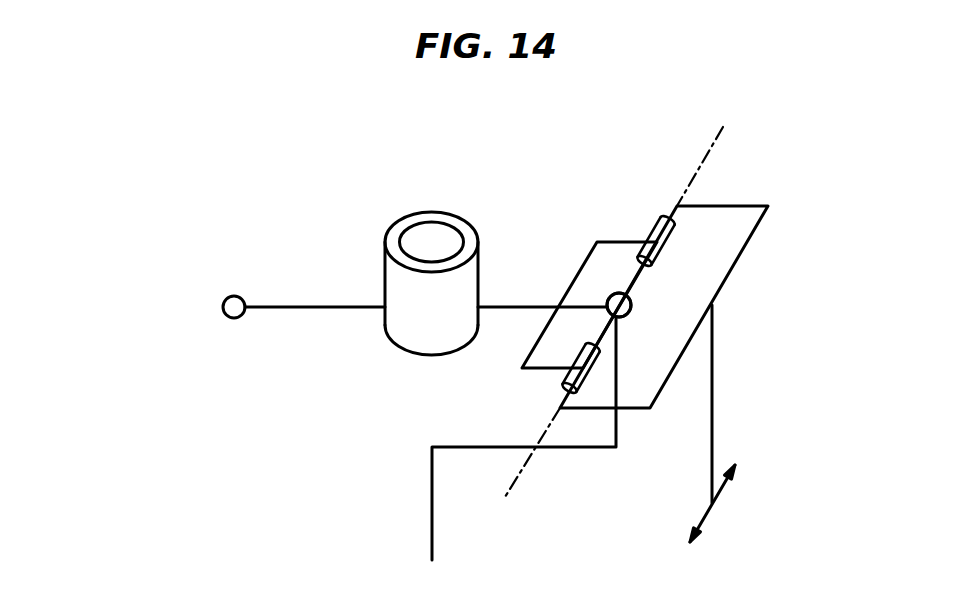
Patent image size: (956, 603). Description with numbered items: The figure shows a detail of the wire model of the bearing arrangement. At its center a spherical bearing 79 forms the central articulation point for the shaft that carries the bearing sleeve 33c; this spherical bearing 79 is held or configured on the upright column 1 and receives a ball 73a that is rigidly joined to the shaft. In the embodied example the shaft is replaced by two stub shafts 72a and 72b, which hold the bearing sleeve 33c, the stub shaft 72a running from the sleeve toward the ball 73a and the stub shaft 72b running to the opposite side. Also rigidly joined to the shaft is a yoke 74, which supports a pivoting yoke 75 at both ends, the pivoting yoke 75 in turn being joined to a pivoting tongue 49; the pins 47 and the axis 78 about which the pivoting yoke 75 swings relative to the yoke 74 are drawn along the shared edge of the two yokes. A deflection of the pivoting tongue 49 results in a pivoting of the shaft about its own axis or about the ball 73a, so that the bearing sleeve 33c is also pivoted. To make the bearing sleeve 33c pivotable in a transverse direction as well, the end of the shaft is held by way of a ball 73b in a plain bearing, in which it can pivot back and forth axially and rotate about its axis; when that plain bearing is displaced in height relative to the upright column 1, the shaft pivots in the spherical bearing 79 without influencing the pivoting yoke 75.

The upright column 1 is at (430, 508).
The bearing sleeve 33c is at (400, 226).
The hinge pin cylinders 47 is at (647, 229).
The pivoting tongue 49 is at (714, 420).
The stub shaft 72a is at (515, 305).
The stub shaft 72b is at (288, 310).
The ball 73a is at (628, 315).
The ball 73b is at (226, 318).
The yoke 74 is at (586, 260).
The pivoting yoke 75 is at (762, 217).
The hinge axis 78 is at (718, 142).
The spherical bearing 79 is at (632, 300).